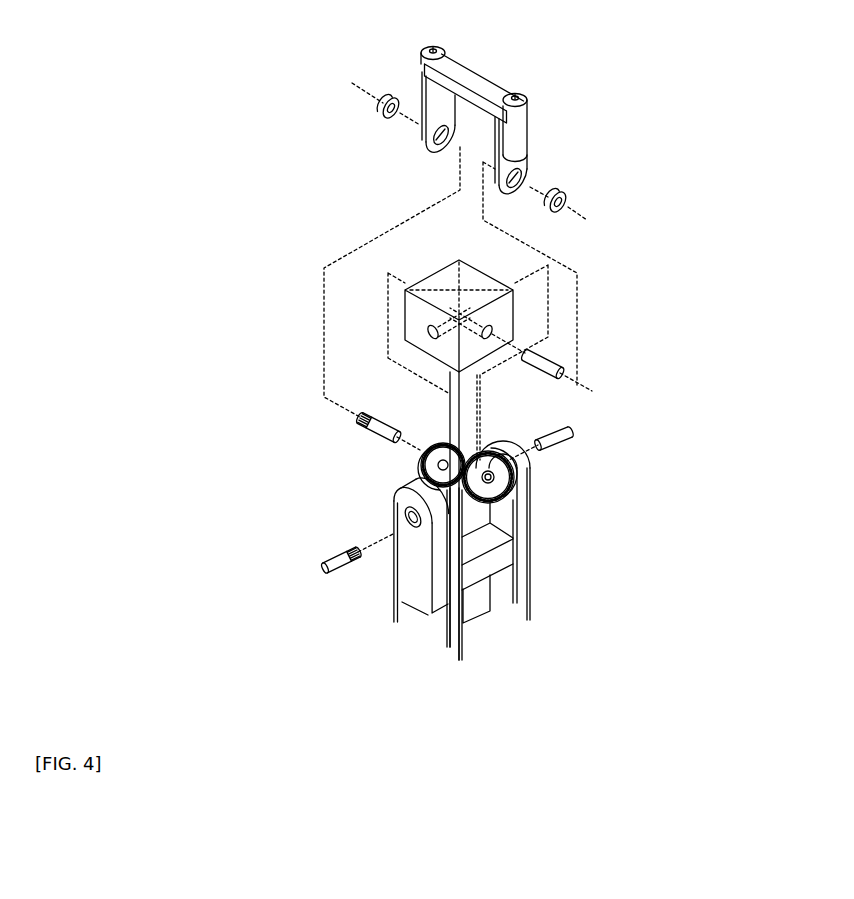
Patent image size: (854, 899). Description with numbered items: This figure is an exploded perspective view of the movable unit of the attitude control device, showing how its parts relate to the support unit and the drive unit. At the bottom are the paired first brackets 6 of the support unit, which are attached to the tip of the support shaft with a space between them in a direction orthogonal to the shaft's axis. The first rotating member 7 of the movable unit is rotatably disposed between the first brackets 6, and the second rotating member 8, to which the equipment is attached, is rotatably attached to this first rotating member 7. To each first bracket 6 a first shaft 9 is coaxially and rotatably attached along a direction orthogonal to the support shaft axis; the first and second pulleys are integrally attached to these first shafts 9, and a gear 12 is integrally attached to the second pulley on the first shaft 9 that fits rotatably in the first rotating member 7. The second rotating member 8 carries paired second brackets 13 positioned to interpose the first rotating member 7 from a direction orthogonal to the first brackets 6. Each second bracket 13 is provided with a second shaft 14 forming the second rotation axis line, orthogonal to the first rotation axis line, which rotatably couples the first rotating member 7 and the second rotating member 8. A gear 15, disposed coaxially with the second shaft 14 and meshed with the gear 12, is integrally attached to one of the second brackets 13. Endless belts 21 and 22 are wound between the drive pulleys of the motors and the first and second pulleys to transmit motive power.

The first bracket 6 is at (413, 573).
The first rotating member 7 is at (512, 310).
The second rotating member 8 is at (487, 82).
The first shaft 9 is at (321, 568).
The gear 12 is at (535, 517).
The second bracket 13 is at (418, 92).
The second shaft 14 is at (358, 433).
The gear 15 is at (418, 463).
The endless belt 21 is at (450, 632).
The endless belt 22 is at (524, 588).